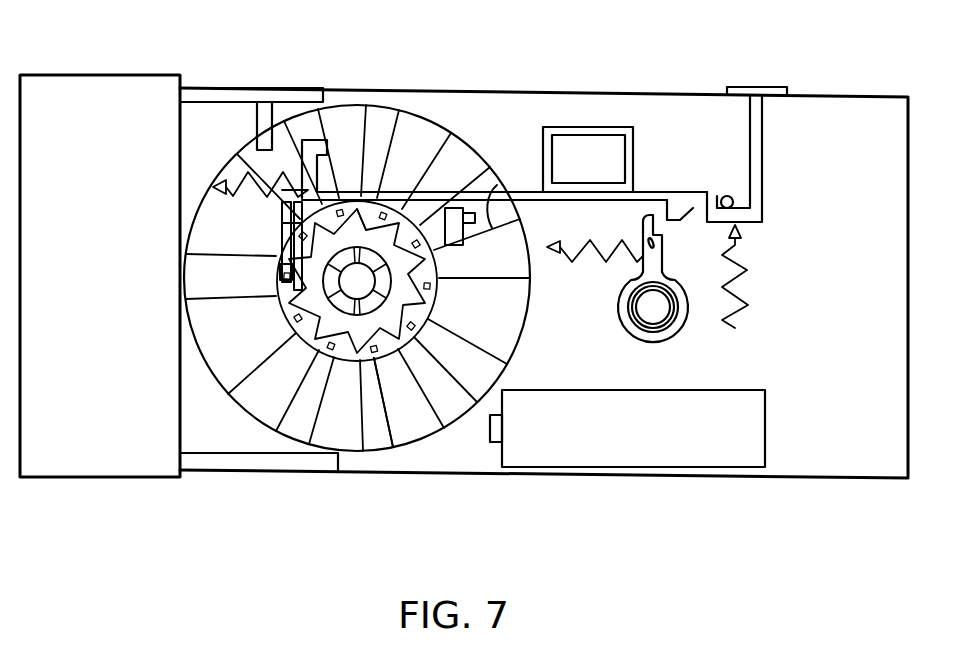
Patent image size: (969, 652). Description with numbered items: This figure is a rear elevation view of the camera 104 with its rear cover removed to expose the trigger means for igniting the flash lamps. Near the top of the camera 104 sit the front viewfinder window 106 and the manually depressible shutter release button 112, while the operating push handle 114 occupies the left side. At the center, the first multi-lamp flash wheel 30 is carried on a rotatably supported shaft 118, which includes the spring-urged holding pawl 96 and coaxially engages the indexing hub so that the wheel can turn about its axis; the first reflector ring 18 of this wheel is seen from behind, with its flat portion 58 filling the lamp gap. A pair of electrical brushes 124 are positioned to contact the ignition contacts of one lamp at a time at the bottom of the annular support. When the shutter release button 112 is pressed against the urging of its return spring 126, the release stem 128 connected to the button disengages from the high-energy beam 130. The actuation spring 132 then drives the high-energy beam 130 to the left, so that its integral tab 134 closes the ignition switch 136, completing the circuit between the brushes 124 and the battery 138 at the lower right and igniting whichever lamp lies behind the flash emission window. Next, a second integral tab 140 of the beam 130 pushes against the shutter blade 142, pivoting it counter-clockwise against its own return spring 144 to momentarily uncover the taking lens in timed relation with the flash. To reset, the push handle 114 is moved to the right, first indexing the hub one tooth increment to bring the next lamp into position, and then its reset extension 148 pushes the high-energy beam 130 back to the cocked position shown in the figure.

The first reflector ring 18 is at (413, 430).
The first multi-lamp flash wheel 30 is at (432, 428).
The flat portion 58 is at (223, 360).
The spring-urged holding pawl 96 is at (349, 222).
The camera 104 is at (464, 91).
The front viewfinder window 106 is at (593, 145).
The shutter release button 112 is at (750, 88).
The operating push handle 114 is at (78, 95).
The rotatably supported shaft 118 is at (363, 282).
The electrical brushes 124 is at (280, 212).
The return spring 126 is at (748, 270).
The release stem 128 is at (757, 180).
The high-energy beam 130 is at (652, 197).
The actuation spring 132 is at (213, 185).
The integral tab 134 is at (485, 207).
The ignition switch 136 is at (460, 207).
The battery 138 is at (645, 455).
The integral tab 140 is at (672, 215).
The shutter blade 142 is at (667, 340).
The return spring 144 is at (548, 255).
The reset extension 148 is at (263, 125).